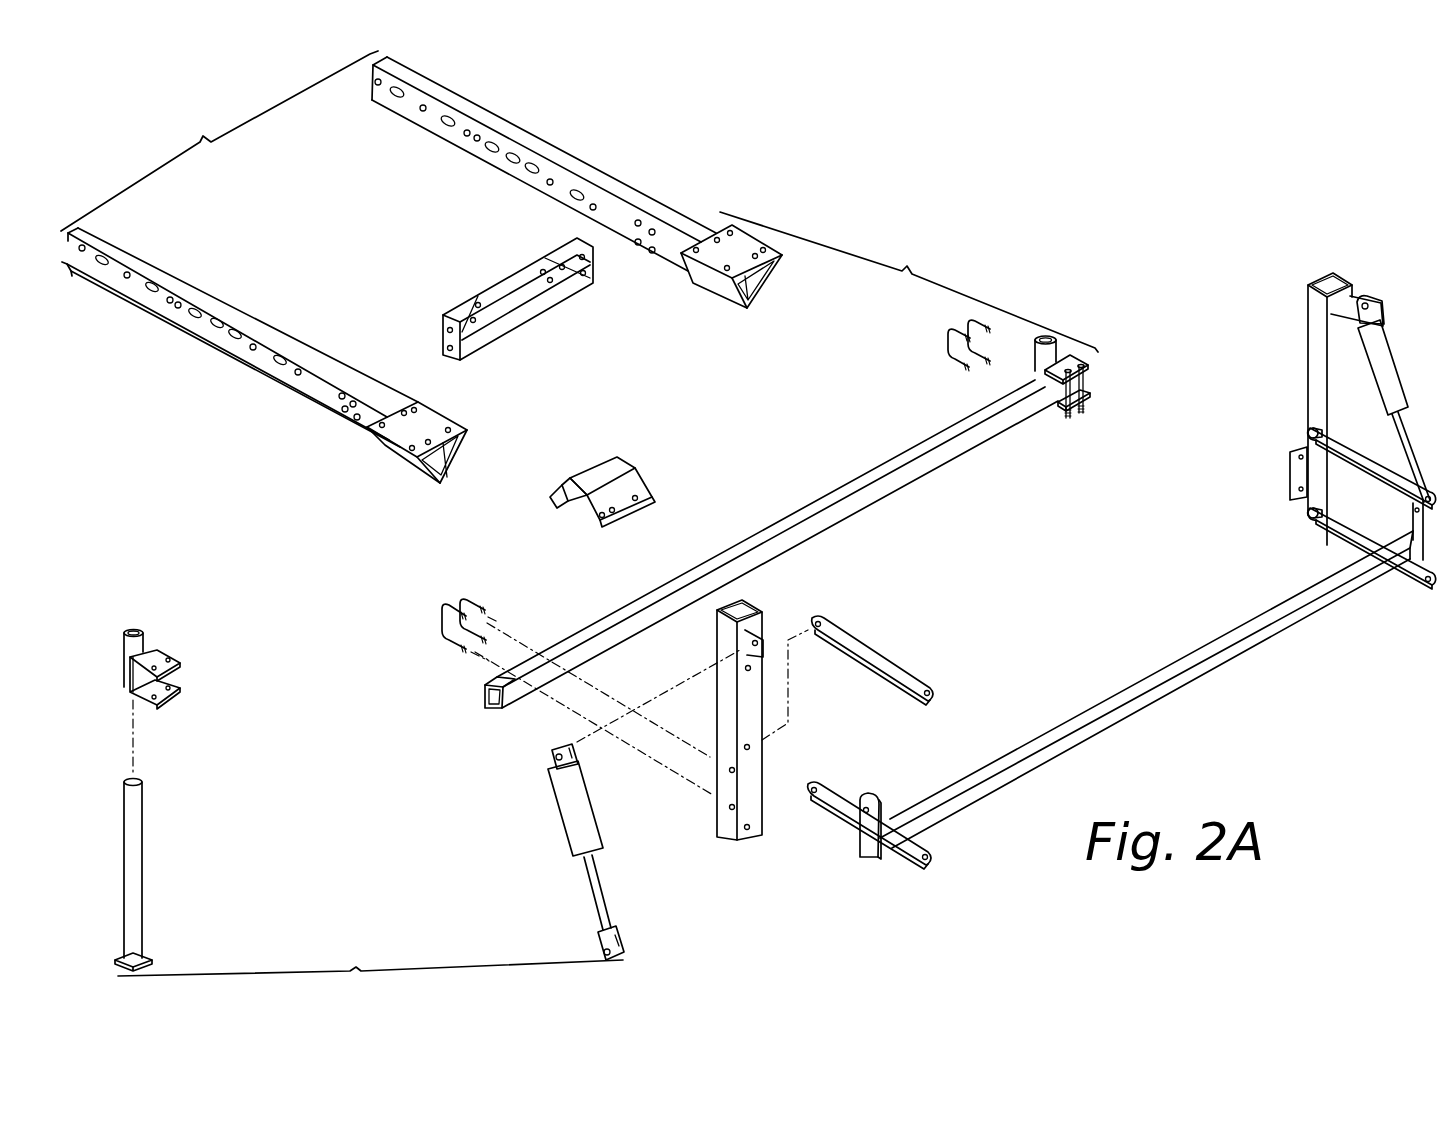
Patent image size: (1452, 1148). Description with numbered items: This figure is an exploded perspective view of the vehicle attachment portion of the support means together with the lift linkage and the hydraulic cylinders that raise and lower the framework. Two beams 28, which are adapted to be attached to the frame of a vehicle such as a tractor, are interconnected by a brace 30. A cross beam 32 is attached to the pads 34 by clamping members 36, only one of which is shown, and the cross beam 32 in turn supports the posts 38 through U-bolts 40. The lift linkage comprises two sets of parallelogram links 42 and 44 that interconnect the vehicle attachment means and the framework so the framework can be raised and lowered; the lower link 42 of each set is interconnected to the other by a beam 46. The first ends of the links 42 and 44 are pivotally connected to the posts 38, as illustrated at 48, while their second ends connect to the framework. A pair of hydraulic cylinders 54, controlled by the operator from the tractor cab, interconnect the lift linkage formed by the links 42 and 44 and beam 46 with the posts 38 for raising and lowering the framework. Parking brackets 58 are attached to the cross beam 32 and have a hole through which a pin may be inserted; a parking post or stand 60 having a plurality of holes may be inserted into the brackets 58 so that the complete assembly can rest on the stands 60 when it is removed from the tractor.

The beams 28 is at (615, 183).
The brace 30 is at (528, 312).
The cross beam 32 is at (771, 544).
The pads 34 is at (750, 268).
The clamping members 36 is at (600, 475).
The posts 38 is at (1315, 352).
The U-bolts 40 is at (946, 332).
The lower link 42 is at (1337, 527).
The links 44 is at (1383, 475).
The beam 46 is at (1175, 663).
The pivotal connection 48 is at (1308, 435).
The hydraulic cylinders 54 is at (1387, 342).
The parking brackets 58 is at (1057, 350).
The parking post 60 is at (135, 853).